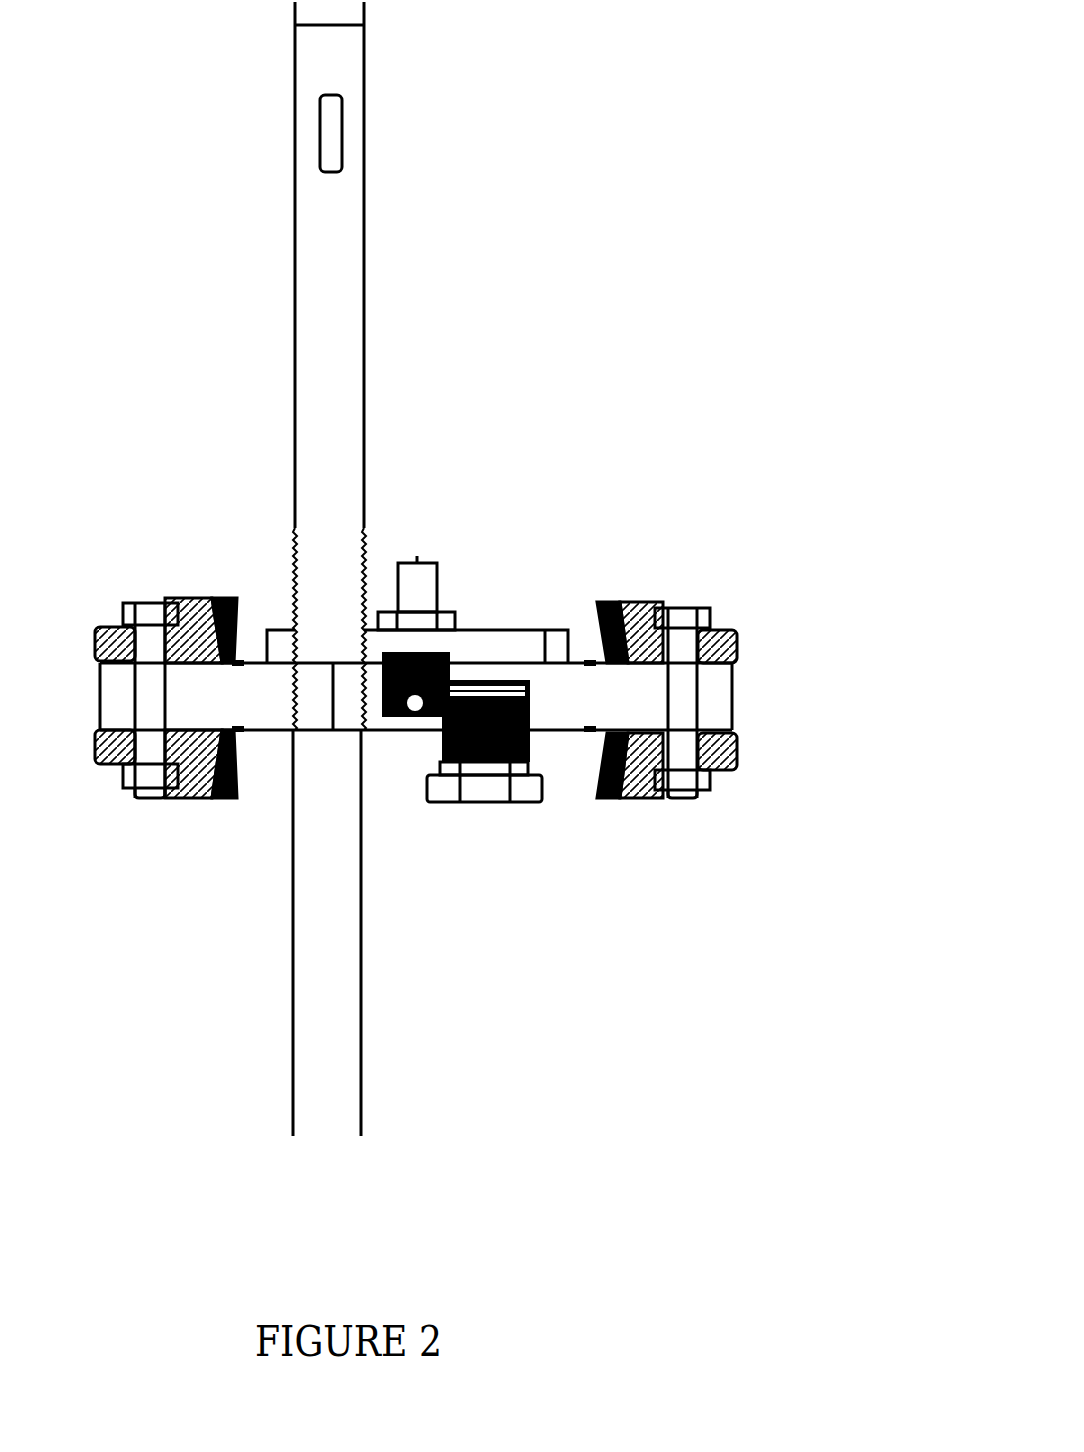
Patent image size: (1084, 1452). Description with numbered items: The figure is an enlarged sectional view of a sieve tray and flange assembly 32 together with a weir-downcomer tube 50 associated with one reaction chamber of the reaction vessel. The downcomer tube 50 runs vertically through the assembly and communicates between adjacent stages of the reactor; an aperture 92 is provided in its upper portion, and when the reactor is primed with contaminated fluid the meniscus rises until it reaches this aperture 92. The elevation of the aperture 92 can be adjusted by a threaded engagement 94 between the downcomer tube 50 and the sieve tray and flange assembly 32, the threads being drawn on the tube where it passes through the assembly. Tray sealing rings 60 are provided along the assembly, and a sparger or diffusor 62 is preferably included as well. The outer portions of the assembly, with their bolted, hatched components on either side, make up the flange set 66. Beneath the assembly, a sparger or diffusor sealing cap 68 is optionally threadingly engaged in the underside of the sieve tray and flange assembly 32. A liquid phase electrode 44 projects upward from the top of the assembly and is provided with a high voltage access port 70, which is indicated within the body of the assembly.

The sieve tray and flange assembly 32 is at (563, 722).
The liquid phase electrode 44 is at (501, 550).
The weir-downcomer tube 50 is at (403, 569).
The tray sealing rings 60 is at (384, 579).
The sparger or diffusor 62 is at (550, 633).
The flange set 66 is at (753, 655).
The sparger or diffusor sealing caps 68 is at (523, 808).
The high voltage access port 70 is at (463, 845).
The aperture 92 is at (333, 133).
The threaded engagement 94 is at (364, 552).